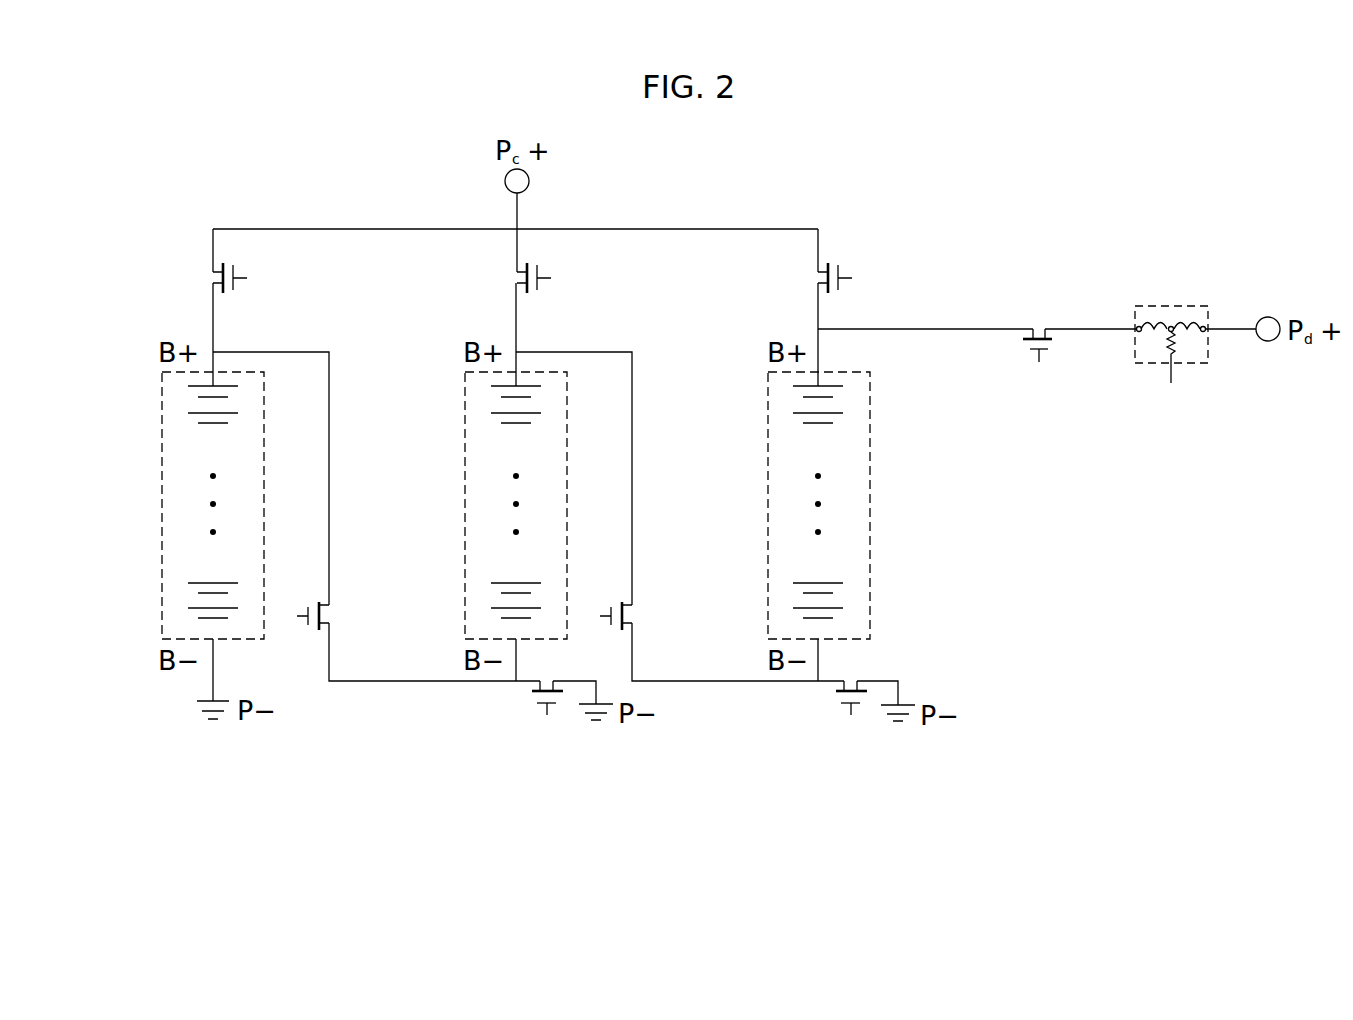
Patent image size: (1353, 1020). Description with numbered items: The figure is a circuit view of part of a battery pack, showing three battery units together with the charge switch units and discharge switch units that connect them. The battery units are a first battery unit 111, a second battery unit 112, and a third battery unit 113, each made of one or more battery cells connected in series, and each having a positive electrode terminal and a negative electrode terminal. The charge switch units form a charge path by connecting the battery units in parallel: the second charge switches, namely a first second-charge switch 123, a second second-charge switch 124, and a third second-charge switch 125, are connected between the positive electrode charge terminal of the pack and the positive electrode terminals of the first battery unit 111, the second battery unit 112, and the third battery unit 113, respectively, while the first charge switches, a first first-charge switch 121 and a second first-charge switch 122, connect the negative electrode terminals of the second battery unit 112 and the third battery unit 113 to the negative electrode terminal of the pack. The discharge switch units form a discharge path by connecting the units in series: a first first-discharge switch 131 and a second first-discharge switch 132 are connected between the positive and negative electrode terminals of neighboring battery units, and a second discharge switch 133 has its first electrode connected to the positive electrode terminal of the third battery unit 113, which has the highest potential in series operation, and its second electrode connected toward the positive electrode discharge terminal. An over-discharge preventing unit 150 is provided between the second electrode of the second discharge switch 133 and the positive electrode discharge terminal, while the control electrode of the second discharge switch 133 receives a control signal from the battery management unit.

The first battery unit 111 is at (162, 504).
The second battery unit 112 is at (465, 504).
The third battery unit 113 is at (768, 504).
The first first-charge switch 121 is at (534, 695).
The second first-charge switch 122 is at (838, 695).
The first second-charge switch 123 is at (213, 278).
The second second-charge switch 124 is at (517, 278).
The third second-charge switch 125 is at (818, 278).
The first first-discharge switch 131 is at (333, 614).
The second first-discharge switch 132 is at (636, 614).
The second discharge switch 133 is at (1037, 328).
The over-discharge preventing unit 150 is at (1171, 305).